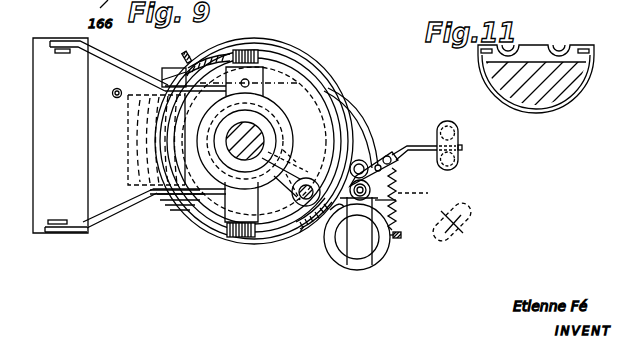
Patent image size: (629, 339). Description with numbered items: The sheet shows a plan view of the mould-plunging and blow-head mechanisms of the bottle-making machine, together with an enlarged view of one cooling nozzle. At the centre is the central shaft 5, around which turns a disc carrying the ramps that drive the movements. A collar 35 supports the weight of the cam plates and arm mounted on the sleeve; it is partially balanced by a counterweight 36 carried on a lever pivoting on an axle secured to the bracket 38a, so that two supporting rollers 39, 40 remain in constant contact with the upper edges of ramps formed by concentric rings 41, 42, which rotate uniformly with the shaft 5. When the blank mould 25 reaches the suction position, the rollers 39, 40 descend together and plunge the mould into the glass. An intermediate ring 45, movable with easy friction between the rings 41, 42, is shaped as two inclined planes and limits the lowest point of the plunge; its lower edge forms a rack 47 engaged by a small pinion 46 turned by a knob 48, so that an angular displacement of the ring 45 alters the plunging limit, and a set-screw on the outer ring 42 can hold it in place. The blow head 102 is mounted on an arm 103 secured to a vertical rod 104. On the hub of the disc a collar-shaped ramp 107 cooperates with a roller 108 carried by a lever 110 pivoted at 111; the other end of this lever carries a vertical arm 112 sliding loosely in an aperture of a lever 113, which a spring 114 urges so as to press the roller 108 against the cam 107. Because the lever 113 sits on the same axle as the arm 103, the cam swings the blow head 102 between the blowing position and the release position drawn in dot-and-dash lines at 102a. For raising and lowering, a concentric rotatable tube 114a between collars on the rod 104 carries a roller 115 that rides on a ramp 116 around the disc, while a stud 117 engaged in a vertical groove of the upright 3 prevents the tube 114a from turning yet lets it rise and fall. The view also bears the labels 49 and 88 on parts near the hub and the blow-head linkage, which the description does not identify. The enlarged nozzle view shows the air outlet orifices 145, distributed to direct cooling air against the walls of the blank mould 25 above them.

In FIG. 9, the upright 3 is at (340, 258).
In FIG. 9, the central shaft 5 is at (250, 139).
In FIG. 11, the blank mould 25 is at (568, 79).
In FIG. 9, the collar 35 is at (210, 177).
In FIG. 9, the counterweight 36 is at (50, 140).
In FIG. 9, the bracket 38a is at (128, 170).
In FIG. 9, the supporting roller 39 is at (248, 80).
In FIG. 9, the supporting roller 40 is at (243, 237).
In FIG. 9, the concentric ring 41 is at (283, 72).
In FIG. 9, the concentric ring 42 is at (272, 232).
In FIG. 9, the intermediate ring 45 is at (330, 103).
In FIG. 9, the pinion 46 is at (170, 68).
In FIG. 9, the rack 47 is at (208, 52).
In FIG. 9, the knob 48 is at (186, 53).
In FIG. 9, the lever arm 49 is at (291, 181).
In FIG. 9, the pawl lever 88 is at (374, 160).
In FIG. 9, the blow head 102 is at (458, 141).
In FIG. 9, the release position of blow head 102a is at (470, 208).
In FIG. 9, the arm 103 is at (413, 142).
In FIG. 9, the vertical rod 104 is at (357, 237).
In FIG. 9, the ramp 107 is at (240, 141).
In FIG. 9, the roller 108 is at (267, 58).
In FIG. 9, the lever 110 is at (361, 161).
In FIG. 9, the pivot 111 is at (113, 96).
In FIG. 9, the vertical arm 112 is at (392, 163).
In FIG. 9, the lever 113 is at (373, 258).
In FIG. 9, the spring 114 is at (398, 187).
In FIG. 9, the rotatable tube 114a is at (343, 207).
In FIG. 9, the roller 115 is at (288, 156).
In FIG. 9, the ramp 116 is at (297, 230).
In FIG. 9, the stud 117 is at (396, 206).
In FIG. 11, the orifices 145 is at (520, 54).